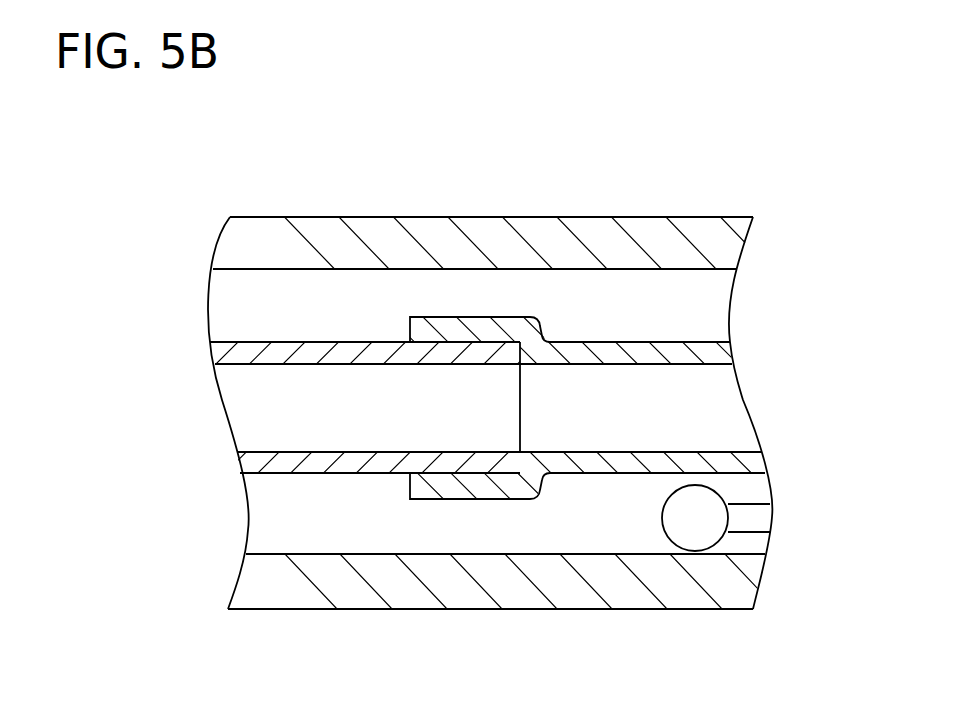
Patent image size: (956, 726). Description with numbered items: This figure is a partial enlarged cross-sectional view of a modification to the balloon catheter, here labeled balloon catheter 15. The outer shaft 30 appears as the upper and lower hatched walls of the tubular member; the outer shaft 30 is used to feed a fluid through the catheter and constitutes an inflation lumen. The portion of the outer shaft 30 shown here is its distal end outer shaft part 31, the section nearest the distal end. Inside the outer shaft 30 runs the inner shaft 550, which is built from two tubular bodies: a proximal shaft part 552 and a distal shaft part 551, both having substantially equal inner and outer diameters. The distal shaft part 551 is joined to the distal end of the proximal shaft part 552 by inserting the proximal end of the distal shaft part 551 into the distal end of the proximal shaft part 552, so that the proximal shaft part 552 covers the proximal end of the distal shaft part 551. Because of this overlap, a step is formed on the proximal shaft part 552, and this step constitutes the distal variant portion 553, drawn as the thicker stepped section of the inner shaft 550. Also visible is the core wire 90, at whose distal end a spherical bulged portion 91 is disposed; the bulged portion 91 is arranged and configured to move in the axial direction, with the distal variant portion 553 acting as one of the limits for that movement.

The balloon catheter 15 is at (516, 128).
The outer shaft 30 is at (744, 241).
The distal end outer shaft part 31 is at (753, 523).
The core wire 90 is at (772, 533).
The bulged portion 91 is at (685, 537).
The inner shaft 550 is at (625, 342).
The distal shaft part 551 is at (272, 342).
The proximal shaft part 552 is at (617, 477).
The distal variant portion 553 is at (548, 485).